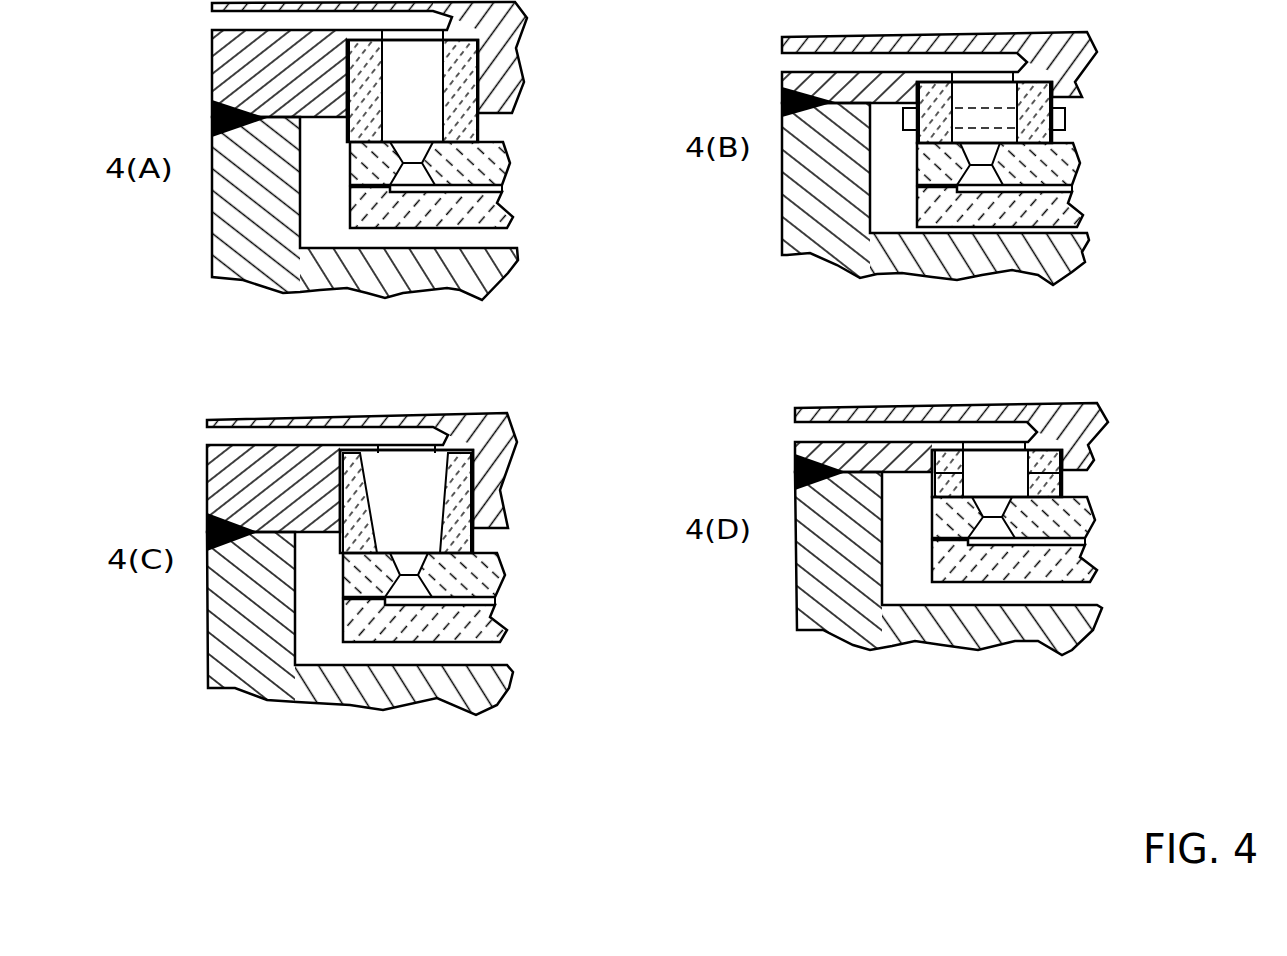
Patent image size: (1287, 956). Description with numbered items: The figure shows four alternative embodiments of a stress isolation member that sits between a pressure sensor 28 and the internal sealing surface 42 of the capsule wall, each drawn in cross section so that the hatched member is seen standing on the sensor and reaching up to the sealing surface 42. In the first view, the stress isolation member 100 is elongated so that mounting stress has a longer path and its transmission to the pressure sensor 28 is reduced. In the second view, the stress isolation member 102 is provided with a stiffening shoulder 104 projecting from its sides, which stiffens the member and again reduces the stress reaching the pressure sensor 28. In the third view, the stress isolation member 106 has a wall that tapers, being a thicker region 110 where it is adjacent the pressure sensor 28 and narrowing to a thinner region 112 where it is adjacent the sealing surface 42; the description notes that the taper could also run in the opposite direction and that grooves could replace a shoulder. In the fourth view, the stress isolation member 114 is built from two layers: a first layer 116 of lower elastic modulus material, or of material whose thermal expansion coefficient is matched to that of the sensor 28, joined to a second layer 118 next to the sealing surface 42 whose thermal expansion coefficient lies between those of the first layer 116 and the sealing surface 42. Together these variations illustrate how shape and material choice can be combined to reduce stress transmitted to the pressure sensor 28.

The pressure sensor 28 is at (502, 190).
The internal sealing surface 42 is at (350, 452).
The stress isolation member 100 is at (468, 127).
The stress isolation member 102 is at (1052, 135).
The stiffening shoulder 104 is at (1065, 118).
The stress isolation member 106 is at (448, 494).
The thicker region 110 is at (473, 535).
The thinner region 112 is at (470, 449).
The stress isolation member 114 is at (1085, 473).
The first layer 116 is at (1062, 480).
The second layer 118 is at (1063, 450).